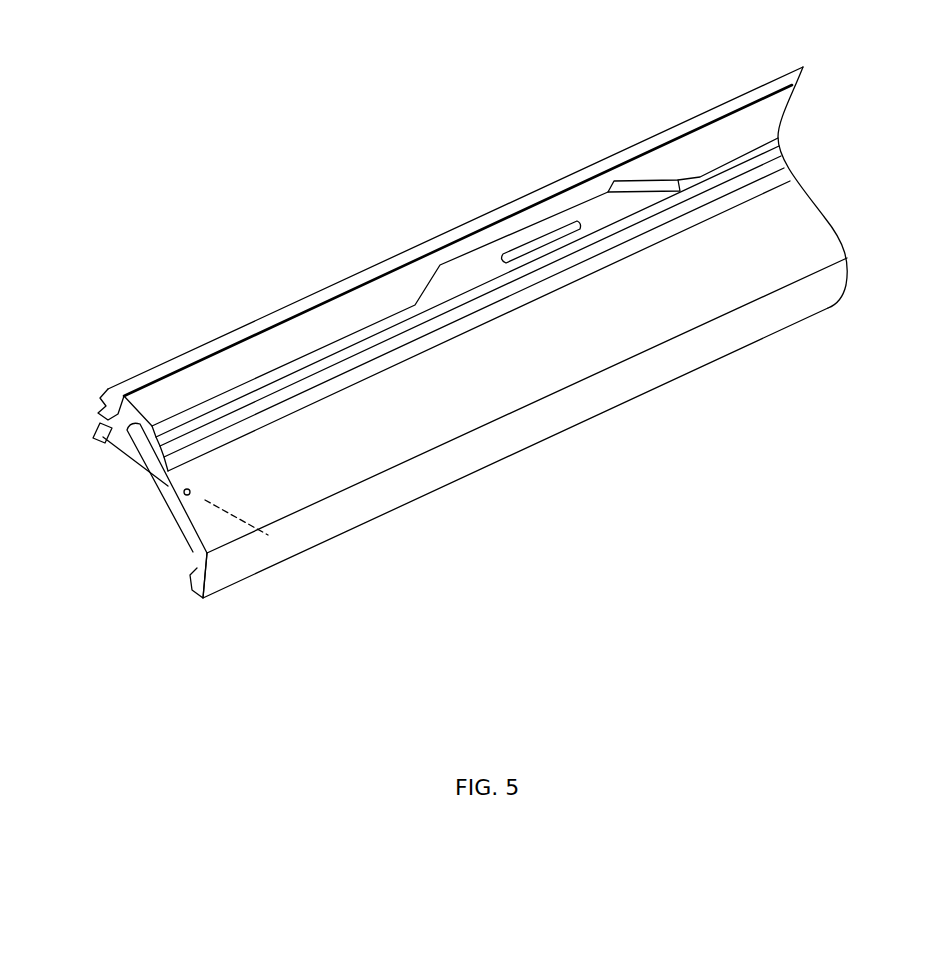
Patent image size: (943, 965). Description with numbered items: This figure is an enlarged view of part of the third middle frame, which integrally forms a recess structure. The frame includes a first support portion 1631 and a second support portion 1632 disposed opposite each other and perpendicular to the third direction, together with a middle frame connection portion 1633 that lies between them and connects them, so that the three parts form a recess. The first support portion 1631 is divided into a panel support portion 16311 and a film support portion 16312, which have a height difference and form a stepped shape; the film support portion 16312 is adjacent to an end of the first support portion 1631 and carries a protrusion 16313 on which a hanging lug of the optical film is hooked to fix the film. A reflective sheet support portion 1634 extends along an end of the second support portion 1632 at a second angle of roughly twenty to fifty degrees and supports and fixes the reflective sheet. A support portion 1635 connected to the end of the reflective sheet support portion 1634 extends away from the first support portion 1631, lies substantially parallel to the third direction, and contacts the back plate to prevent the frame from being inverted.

The first support portion 1631 is at (135, 402).
The panel support portion 16311 is at (350, 307).
The film support portion 16312 is at (323, 365).
The protrusion 16313 is at (505, 253).
The second support portion 1632 is at (139, 455).
The middle frame connection portion 1633 is at (97, 440).
The reflective sheet support portion 1634 is at (168, 500).
The support portion 1635 is at (196, 592).